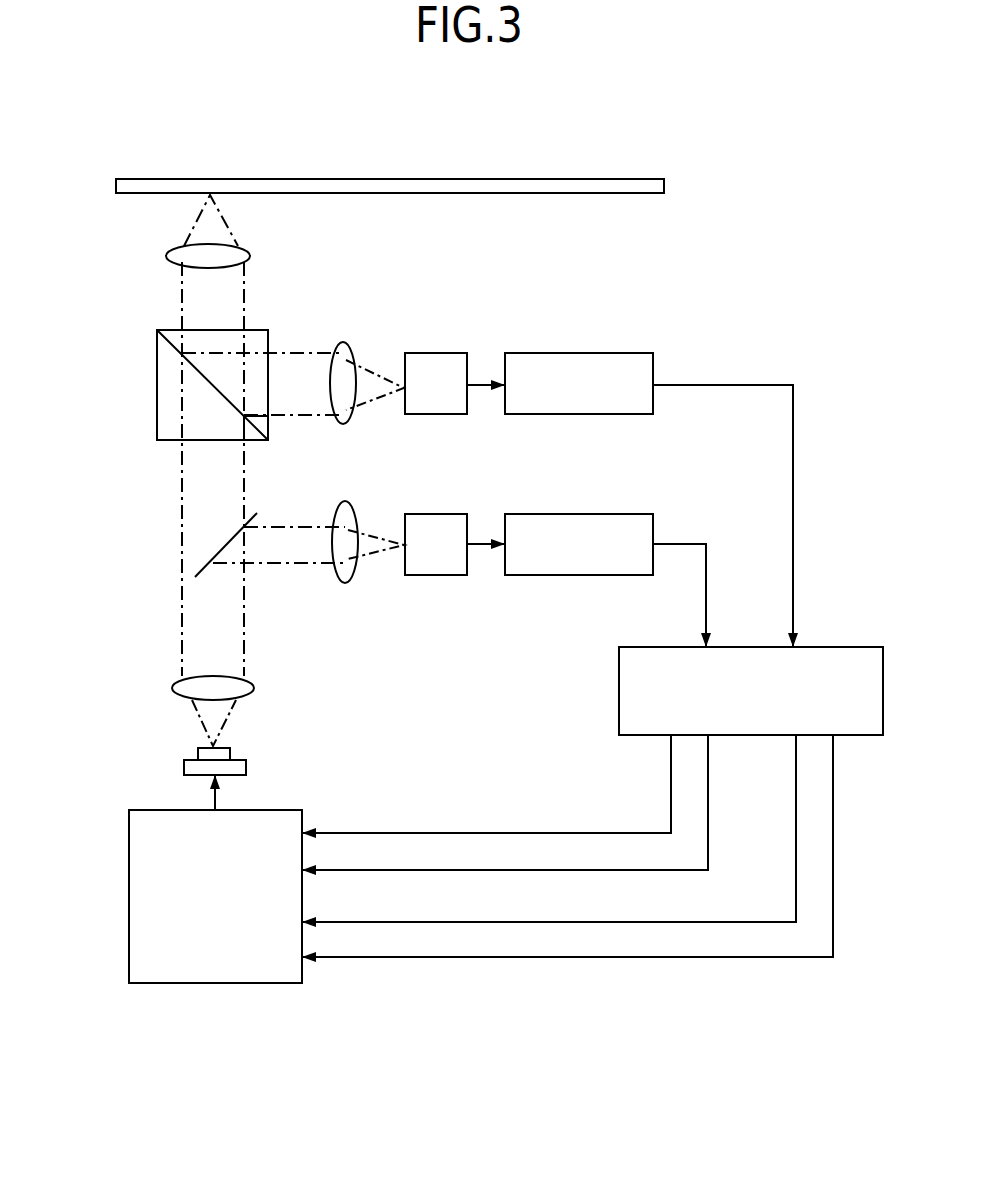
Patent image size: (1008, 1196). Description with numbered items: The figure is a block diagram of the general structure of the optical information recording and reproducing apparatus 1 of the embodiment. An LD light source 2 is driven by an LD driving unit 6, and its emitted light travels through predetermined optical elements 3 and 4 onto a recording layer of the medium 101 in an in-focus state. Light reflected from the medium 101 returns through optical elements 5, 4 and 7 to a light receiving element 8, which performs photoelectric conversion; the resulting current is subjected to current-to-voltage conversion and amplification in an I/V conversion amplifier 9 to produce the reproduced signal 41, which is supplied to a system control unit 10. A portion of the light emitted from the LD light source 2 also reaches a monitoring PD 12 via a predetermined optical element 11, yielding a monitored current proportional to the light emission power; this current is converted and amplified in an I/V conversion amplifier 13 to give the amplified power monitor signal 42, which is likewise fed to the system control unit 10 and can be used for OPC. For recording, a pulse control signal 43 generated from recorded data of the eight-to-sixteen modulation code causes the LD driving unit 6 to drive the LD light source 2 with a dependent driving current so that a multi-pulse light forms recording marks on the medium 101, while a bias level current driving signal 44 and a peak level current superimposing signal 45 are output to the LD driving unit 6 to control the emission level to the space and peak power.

The optical information recording and reproducing apparatus 1 is at (808, 186).
The medium 101 is at (437, 178).
The LD light source 2 is at (184, 772).
The optical element 3 is at (172, 690).
The optical element 4 is at (157, 390).
The optical element 5 is at (166, 257).
The LD driving unit 6 is at (128, 903).
The optical element 7 is at (343, 342).
The light receiving element 8 is at (436, 353).
The I/V conversion amplifier 9 is at (572, 353).
The system control unit 10 is at (619, 715).
The optical element 11 is at (345, 584).
The monitoring PD 12 is at (440, 576).
The I/V conversion amplifier 13 is at (575, 576).
The reproduced signal 41 is at (735, 385).
The amplified power monitor signal 42 is at (690, 544).
The pulse control signal 43 is at (708, 800).
The bias level current driving signal 44 is at (574, 922).
The peak level current superimposing signal 45 is at (500, 957).